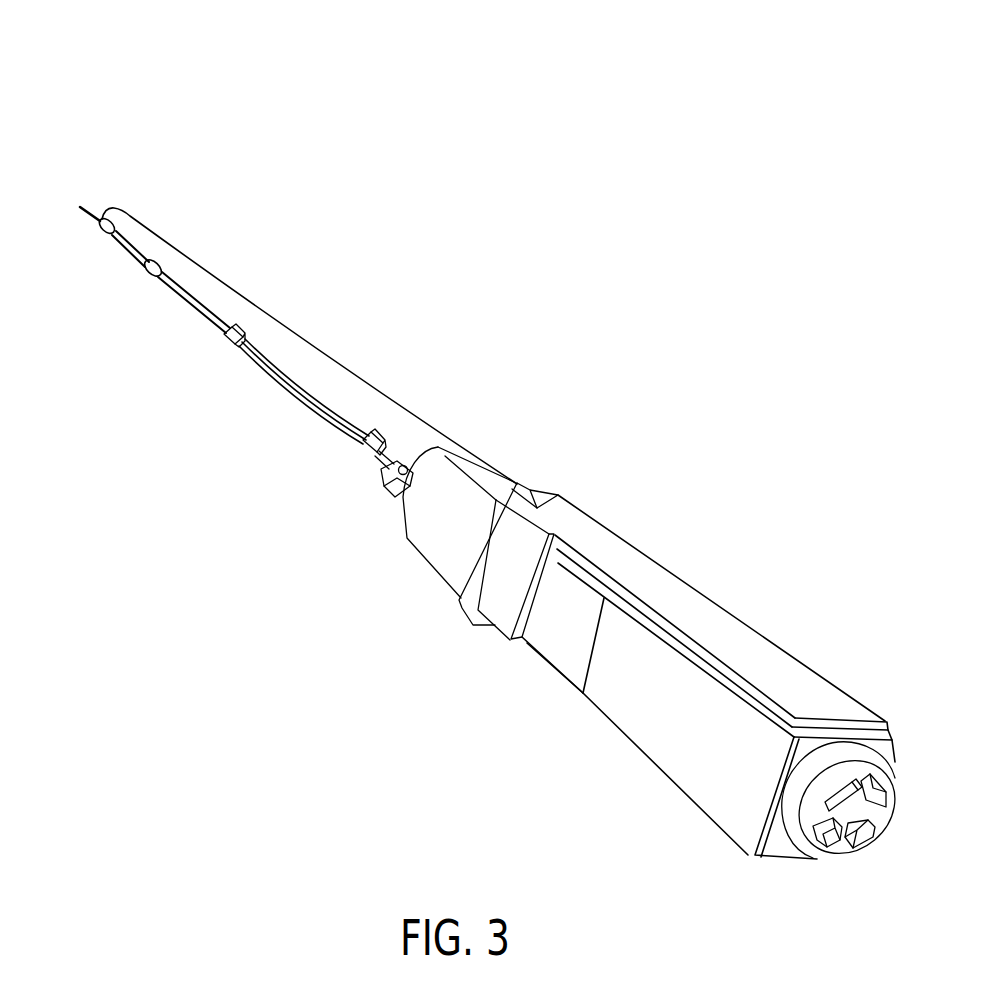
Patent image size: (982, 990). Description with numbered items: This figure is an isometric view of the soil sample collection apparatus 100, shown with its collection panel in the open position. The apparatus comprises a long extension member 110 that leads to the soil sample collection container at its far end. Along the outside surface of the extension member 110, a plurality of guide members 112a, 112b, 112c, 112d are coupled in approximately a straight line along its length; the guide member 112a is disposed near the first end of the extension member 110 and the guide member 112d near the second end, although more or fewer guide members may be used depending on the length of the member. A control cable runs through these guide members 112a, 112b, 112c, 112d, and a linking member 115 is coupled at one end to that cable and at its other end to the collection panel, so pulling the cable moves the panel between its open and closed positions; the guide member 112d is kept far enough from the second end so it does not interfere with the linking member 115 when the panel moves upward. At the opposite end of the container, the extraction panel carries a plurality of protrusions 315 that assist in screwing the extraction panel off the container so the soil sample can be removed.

The soil sample collection apparatus 100 is at (66, 90).
The extension member 110 is at (247, 312).
The guide member 112a is at (100, 228).
The guide member 112b is at (146, 268).
The guide member 112c is at (226, 336).
The guide member 112d is at (363, 444).
The linking member 115 is at (380, 471).
The protrusions 315 is at (836, 831).